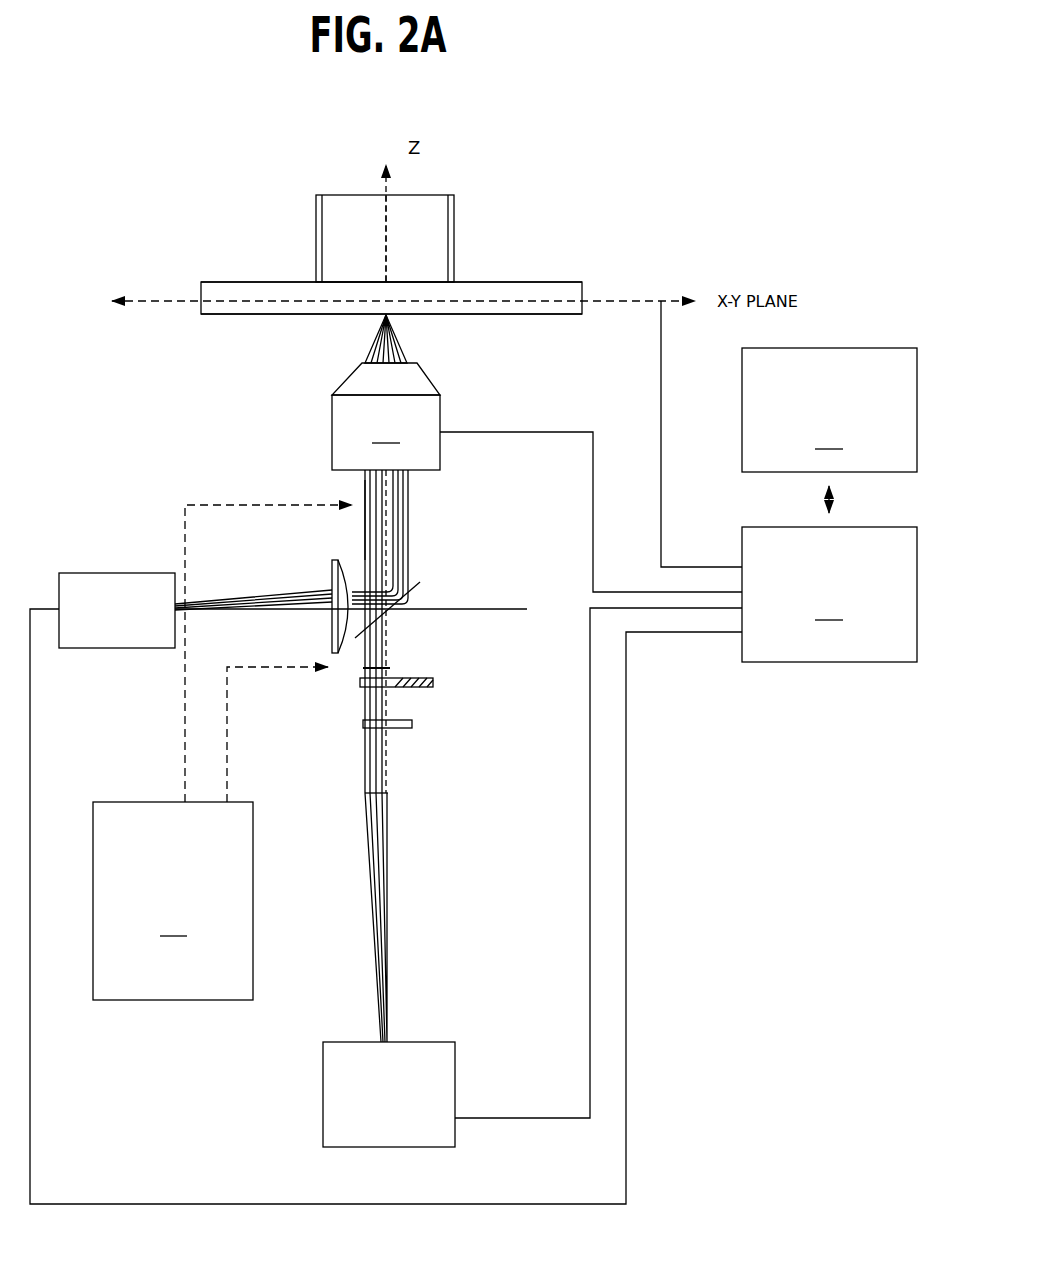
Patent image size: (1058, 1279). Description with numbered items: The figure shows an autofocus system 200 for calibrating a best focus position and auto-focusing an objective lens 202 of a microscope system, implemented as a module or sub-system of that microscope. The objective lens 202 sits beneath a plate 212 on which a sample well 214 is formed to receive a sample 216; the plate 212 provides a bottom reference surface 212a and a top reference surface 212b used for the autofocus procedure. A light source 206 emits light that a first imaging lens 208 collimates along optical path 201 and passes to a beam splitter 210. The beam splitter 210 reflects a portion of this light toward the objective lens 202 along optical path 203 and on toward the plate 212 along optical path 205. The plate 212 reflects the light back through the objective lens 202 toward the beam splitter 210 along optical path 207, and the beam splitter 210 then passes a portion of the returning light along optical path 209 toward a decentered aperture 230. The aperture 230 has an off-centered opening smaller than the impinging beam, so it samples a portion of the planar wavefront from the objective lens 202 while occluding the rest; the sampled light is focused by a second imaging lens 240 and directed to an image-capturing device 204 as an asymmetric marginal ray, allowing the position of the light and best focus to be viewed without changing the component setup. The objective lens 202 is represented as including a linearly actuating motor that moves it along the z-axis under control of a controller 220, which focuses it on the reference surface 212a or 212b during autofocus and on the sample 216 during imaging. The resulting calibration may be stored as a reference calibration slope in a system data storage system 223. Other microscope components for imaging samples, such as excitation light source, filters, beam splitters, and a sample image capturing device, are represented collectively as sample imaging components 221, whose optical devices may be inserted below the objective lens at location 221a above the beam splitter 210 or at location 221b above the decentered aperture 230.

The autofocus system 200 is at (676, 233).
The optical path 201 is at (255, 598).
The objective lens 202 is at (386, 416).
The optical path 203 is at (413, 527).
The image-capturing device 204 is at (440, 1041).
The optical path 205 is at (436, 336).
The light source 206 is at (132, 650).
The optical path 207 is at (352, 507).
The first imaging lens 208 is at (332, 566).
The optical path 209 is at (368, 797).
The beam splitter 210 is at (446, 593).
The plate 212 is at (541, 294).
The bottom reference surface 212a is at (253, 316).
The top reference surface 212b is at (253, 281).
The sample well 214 is at (315, 221).
The sample 216 is at (428, 254).
The controller 220 is at (829, 594).
The sample imaging components 221 is at (173, 901).
The insertion location above the beam splitter 221a is at (248, 504).
The insertion location above the decentered aperture 221b is at (251, 669).
The system data storage system 223 is at (829, 410).
The decentered aperture 230 is at (434, 680).
The second imaging lens 240 is at (413, 727).